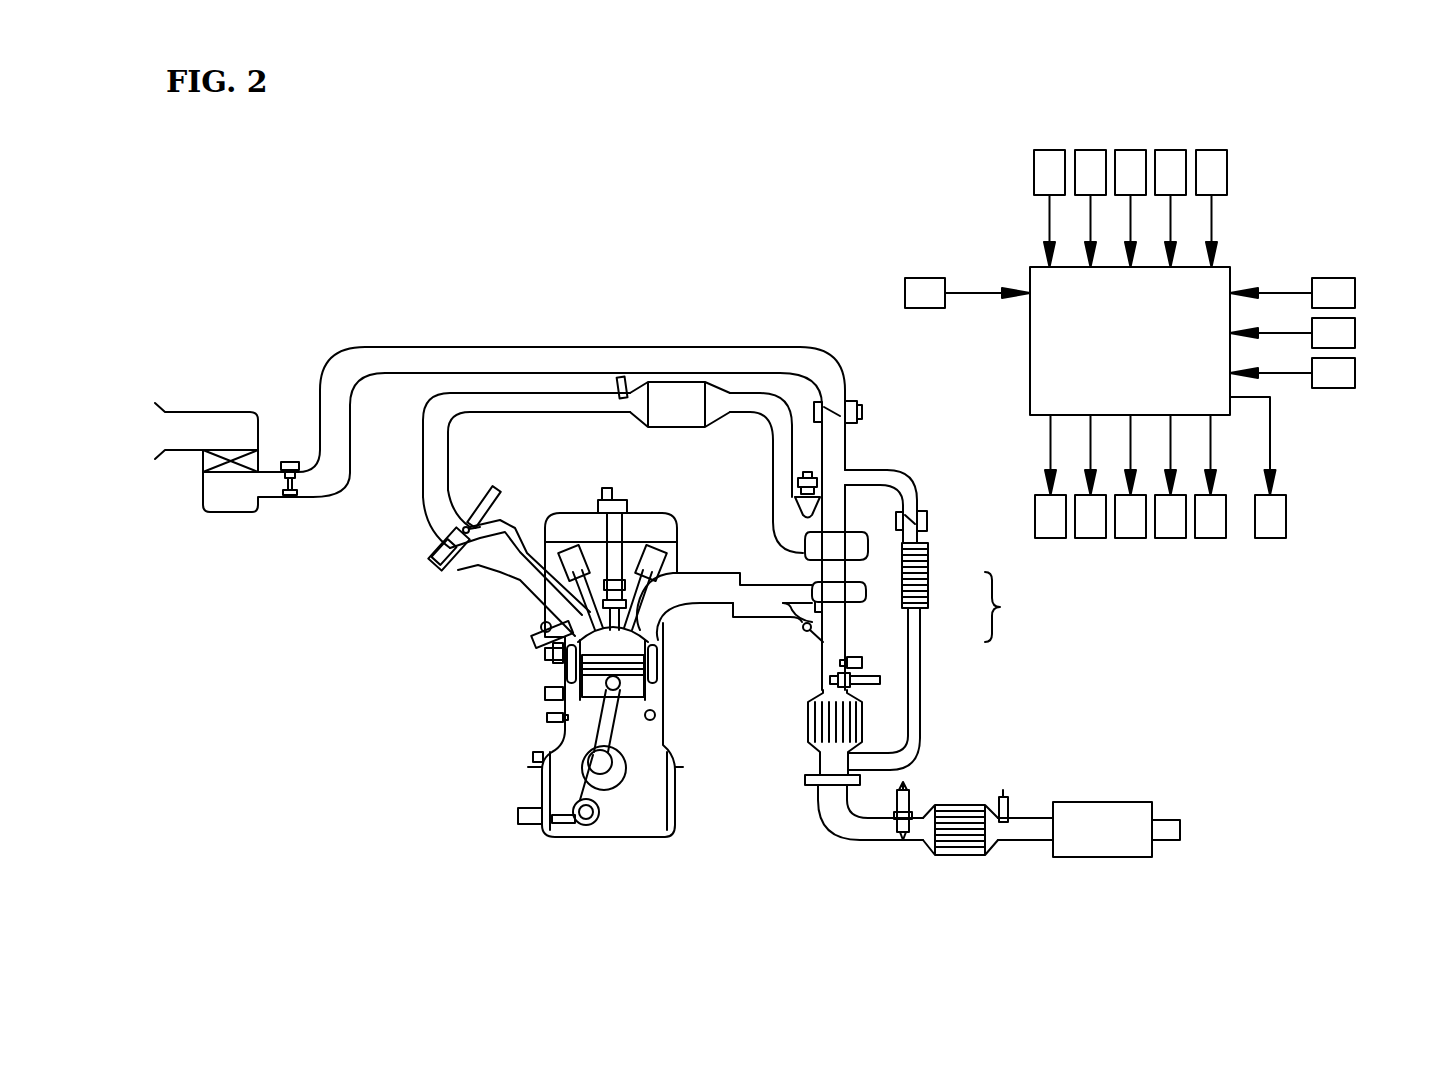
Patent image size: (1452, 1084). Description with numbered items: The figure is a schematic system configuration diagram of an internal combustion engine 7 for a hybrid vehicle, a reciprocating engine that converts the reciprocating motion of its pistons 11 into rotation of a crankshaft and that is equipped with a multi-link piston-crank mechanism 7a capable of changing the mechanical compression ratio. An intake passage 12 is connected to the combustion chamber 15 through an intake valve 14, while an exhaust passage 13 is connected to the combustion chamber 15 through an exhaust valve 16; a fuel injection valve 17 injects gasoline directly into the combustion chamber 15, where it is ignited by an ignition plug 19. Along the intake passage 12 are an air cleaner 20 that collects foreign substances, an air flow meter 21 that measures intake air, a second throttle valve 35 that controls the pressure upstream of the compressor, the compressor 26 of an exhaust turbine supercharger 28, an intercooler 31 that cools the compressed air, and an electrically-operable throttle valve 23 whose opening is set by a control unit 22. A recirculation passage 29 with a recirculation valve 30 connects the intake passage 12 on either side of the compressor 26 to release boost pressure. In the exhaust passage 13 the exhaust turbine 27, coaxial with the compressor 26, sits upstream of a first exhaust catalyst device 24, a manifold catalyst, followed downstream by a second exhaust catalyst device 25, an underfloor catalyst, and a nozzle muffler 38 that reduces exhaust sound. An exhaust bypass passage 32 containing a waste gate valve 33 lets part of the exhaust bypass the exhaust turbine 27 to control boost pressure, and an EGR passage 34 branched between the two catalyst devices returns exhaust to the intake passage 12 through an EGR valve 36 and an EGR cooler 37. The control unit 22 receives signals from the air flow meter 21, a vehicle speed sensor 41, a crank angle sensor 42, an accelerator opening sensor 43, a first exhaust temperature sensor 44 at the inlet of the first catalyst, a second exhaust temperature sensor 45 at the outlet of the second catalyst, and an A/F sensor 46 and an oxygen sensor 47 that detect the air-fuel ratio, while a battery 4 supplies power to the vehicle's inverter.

The battery 4 is at (936, 278).
The internal combustion engine 7 is at (440, 762).
The multi-link piston-crank mechanism 7a is at (664, 805).
The piston 11 is at (552, 697).
The intake passage 12 is at (382, 364).
The exhaust passage 13 is at (1022, 840).
The intake valve 14 is at (570, 600).
The combustion chamber 15 is at (662, 628).
The exhaust valve 16 is at (665, 578).
The fuel injection valve 17 is at (548, 654).
The ignition plug 19 is at (560, 660).
The air cleaner 20 is at (208, 475).
The air flow meter 21 is at (290, 462).
The control unit 22 is at (1030, 353).
The throttle valve 23 is at (450, 525).
The first exhaust catalyst device 24 is at (808, 722).
The second exhaust catalyst device 25 is at (960, 850).
The compressor 26 is at (926, 556).
The exhaust turbine 27 is at (852, 598).
The exhaust turbine supercharger 28 is at (1011, 607).
The recirculation passage 29 is at (800, 502).
The recirculation valve 30 is at (817, 480).
The intercooler 31 is at (678, 417).
The exhaust bypass passage 32 is at (804, 625).
The waste gate valve 33 is at (810, 630).
The EGR passage 34 is at (920, 678).
The second throttle valve 35 is at (852, 412).
The EGR valve 36 is at (920, 515).
The EGR cooler 37 is at (920, 548).
The muffler 38 is at (1098, 848).
The vehicle speed sensor 41 is at (1088, 150).
The crank angle sensor 42 is at (1128, 150).
The accelerator opening sensor 43 is at (1170, 150).
The first exhaust temperature sensor 44 is at (865, 662).
The second exhaust temperature sensor 45 is at (1008, 800).
The A/F sensor 46 is at (875, 685).
The oxygen sensor 47 is at (905, 800).